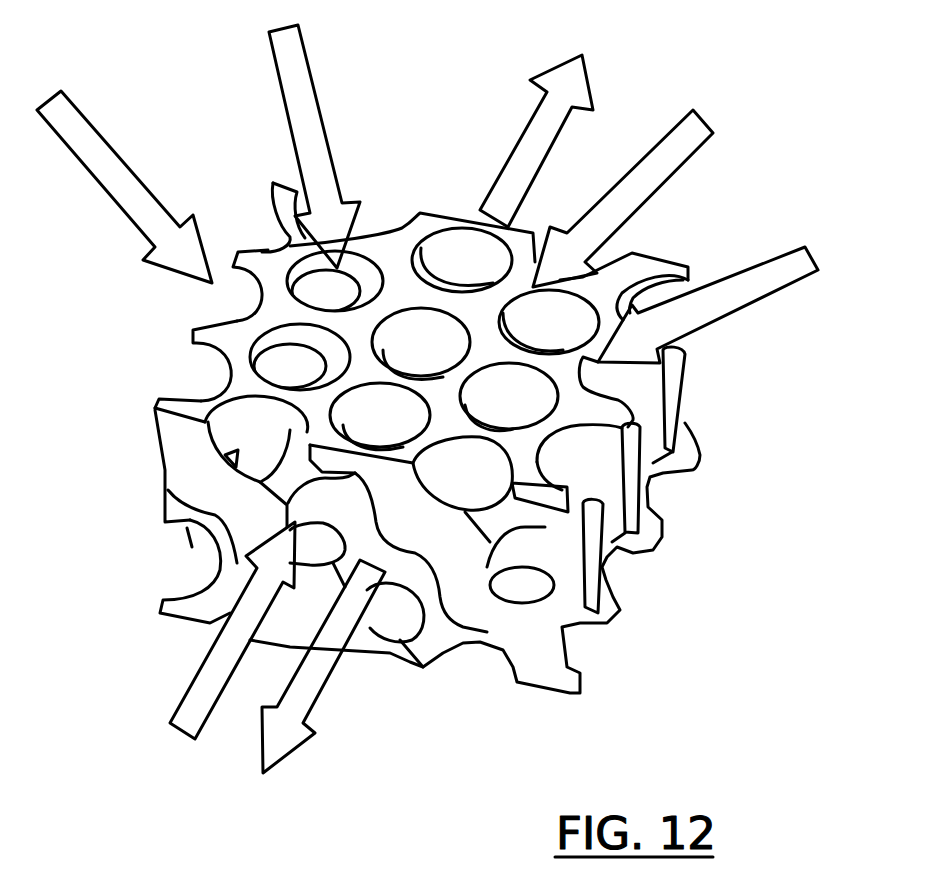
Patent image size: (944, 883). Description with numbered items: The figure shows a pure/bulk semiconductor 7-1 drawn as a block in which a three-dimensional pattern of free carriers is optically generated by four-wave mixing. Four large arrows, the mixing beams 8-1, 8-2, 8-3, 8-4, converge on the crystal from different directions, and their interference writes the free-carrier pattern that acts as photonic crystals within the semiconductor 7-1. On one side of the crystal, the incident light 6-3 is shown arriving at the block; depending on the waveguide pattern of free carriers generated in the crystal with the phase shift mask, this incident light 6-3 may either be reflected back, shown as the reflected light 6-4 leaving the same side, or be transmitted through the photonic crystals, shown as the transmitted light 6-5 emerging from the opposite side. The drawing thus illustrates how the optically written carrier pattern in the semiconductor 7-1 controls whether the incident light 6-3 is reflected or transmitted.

The pure/bulk semiconductor 7-1 is at (578, 677).
The 4-wave mixing beam 8-1 is at (75, 160).
The 4-wave mixing beam 8-2 is at (280, 87).
The 4-wave mixing beam 8-3 is at (672, 173).
The 4-wave mixing beam 8-4 is at (760, 306).
The incident light 6-3 is at (193, 678).
The reflected light 6-4 is at (295, 752).
The transmitted light 6-5 is at (588, 92).